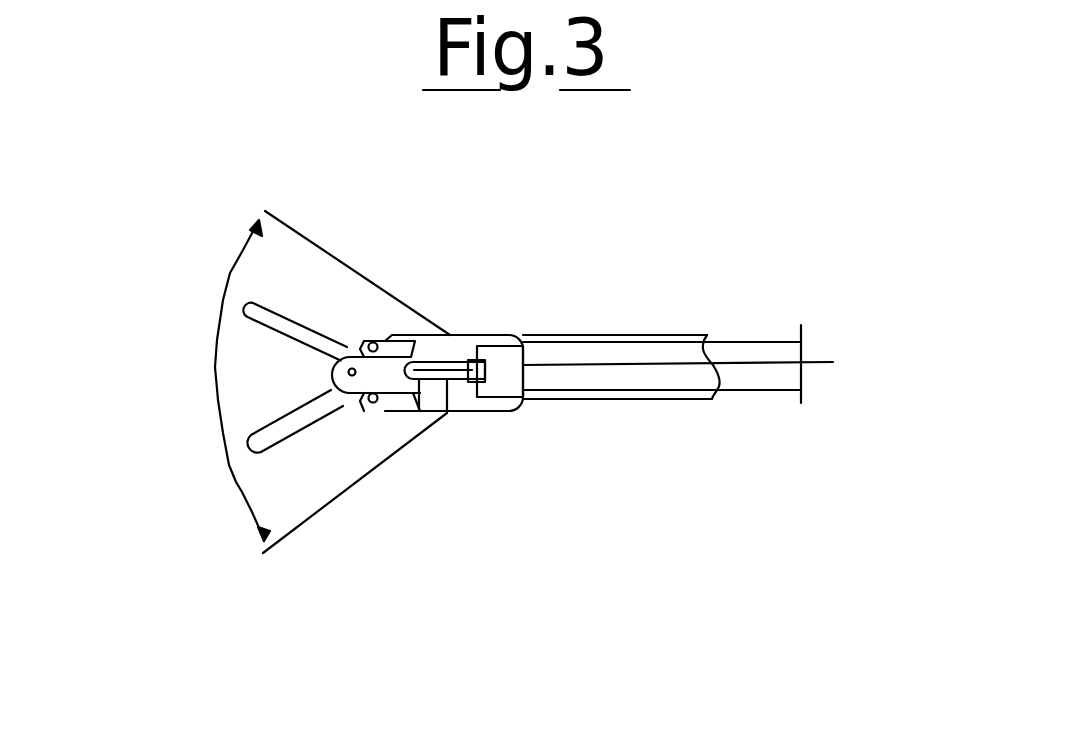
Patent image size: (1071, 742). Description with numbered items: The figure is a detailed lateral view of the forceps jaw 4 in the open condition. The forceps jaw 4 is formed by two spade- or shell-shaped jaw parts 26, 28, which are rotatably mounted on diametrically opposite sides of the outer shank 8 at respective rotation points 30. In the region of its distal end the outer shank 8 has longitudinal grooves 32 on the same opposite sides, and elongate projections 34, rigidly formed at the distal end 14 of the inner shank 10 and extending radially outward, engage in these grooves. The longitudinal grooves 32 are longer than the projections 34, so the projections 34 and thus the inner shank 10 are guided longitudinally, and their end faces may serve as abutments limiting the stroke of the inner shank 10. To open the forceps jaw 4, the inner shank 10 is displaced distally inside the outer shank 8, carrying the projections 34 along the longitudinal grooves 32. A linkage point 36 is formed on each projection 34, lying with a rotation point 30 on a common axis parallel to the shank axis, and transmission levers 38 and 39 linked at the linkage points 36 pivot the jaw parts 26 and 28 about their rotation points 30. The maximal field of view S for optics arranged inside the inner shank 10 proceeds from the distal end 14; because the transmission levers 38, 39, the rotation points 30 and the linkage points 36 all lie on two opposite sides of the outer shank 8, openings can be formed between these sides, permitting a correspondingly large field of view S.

The forceps jaw 4 is at (266, 278).
The outer shank 8 is at (630, 334).
The inner shank 10 is at (755, 352).
The distal end of the inner shank 14 is at (502, 355).
The jaw part 26 is at (360, 588).
The jaw part 28 is at (283, 334).
The rotation point 30 is at (353, 368).
The longitudinal groove 32 is at (518, 486).
The projection 34 is at (441, 362).
The linkage point 36 is at (465, 503).
The transmission lever 38 is at (380, 344).
The transmission lever 39 is at (450, 600).
The field of view S is at (224, 453).